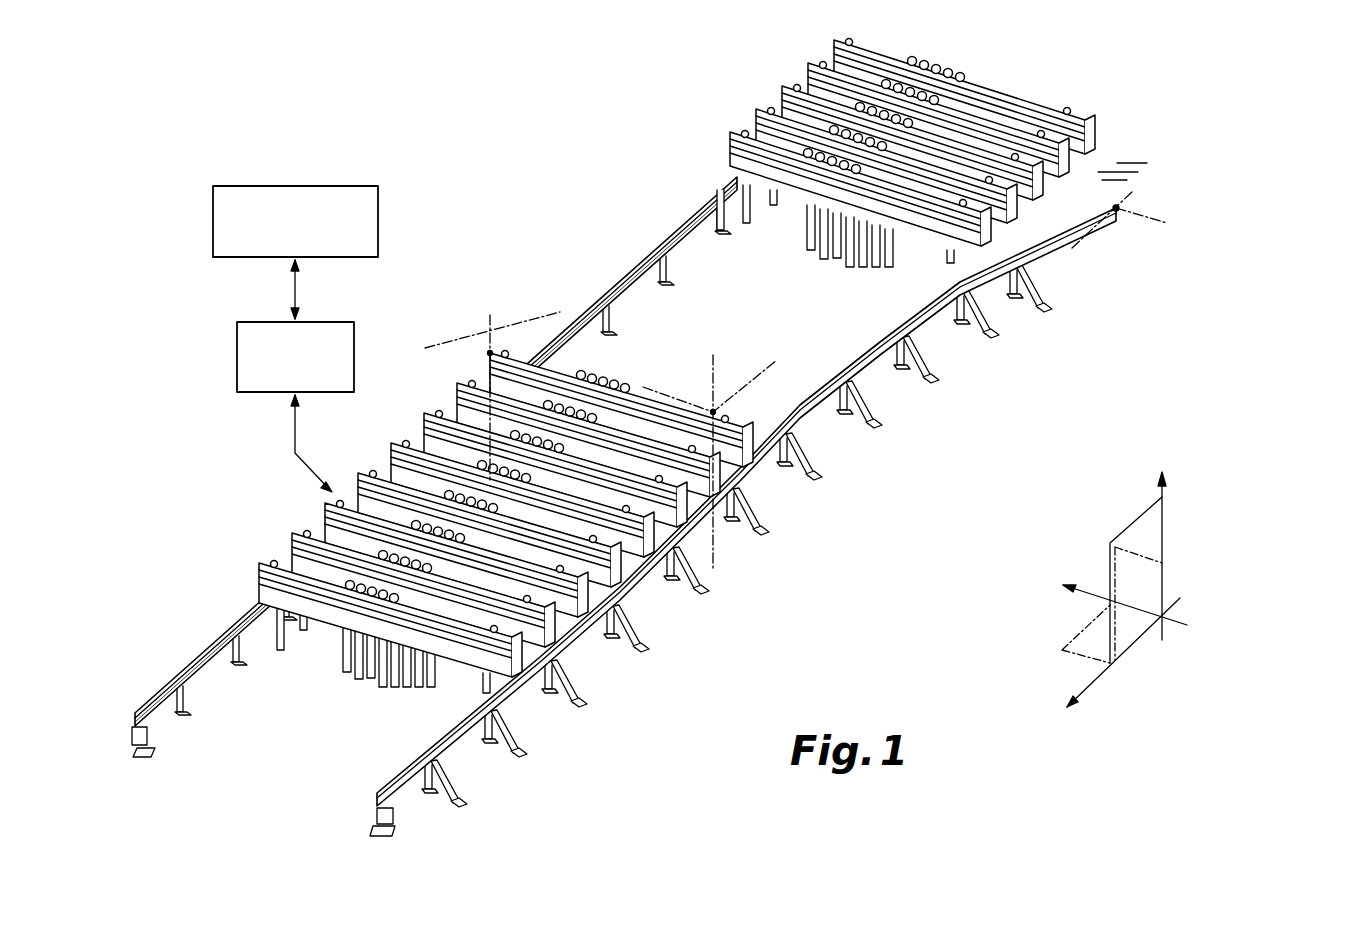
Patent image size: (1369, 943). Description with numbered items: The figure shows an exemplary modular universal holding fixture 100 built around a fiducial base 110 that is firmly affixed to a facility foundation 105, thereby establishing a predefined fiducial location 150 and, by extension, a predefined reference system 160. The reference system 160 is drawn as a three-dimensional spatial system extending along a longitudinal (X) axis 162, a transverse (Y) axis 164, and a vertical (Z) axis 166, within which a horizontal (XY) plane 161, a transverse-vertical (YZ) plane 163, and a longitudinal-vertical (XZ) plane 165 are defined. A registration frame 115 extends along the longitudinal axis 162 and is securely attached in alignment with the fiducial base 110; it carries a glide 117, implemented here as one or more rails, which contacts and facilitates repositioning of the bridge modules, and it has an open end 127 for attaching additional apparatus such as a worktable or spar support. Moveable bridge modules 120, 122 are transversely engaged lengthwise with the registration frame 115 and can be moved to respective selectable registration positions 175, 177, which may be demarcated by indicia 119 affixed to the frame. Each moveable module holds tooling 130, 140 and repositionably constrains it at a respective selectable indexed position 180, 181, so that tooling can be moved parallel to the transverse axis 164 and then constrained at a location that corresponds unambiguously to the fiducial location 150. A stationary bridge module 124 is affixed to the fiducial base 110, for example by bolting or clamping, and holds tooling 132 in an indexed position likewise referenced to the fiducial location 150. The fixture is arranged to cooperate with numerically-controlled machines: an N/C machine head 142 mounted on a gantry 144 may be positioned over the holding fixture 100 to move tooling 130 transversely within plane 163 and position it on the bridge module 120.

The modular universal holding fixture 100 is at (722, 24).
The facility foundation 105 is at (1122, 162).
The fiducial base 110 is at (624, 486).
The registration frame 115 is at (645, 242).
The glide 117 is at (613, 278).
The indicia 119 is at (432, 770).
The bridge module 120 is at (494, 350).
The bridge module 122 is at (468, 378).
The bridge module 124 is at (882, 55).
The open end 127 is at (372, 795).
The tooling 130 is at (710, 420).
The tooling 132 is at (913, 68).
The tooling 140 is at (484, 346).
The N/C machine head 142 is at (227, 184).
The gantry 144 is at (250, 321).
The predefined fiducial location 150 is at (1118, 211).
The predefined reference system 160 is at (1120, 600).
The horizontal (XY) plane 161 is at (1068, 650).
The longitudinal (X) axis 162 is at (1090, 684).
The transverse-vertical (YZ) plane 163 is at (1137, 551).
The transverse (Y) axis 164 is at (1087, 588).
The longitudinal-vertical (XZ) plane 165 is at (1140, 515).
The vertical (Z) axis 166 is at (1164, 527).
The selectable registration position 175 is at (768, 490).
The selectable registration position 177 is at (722, 478).
The selectable indexed position 180 is at (716, 410).
The indexed location 181 is at (489, 348).